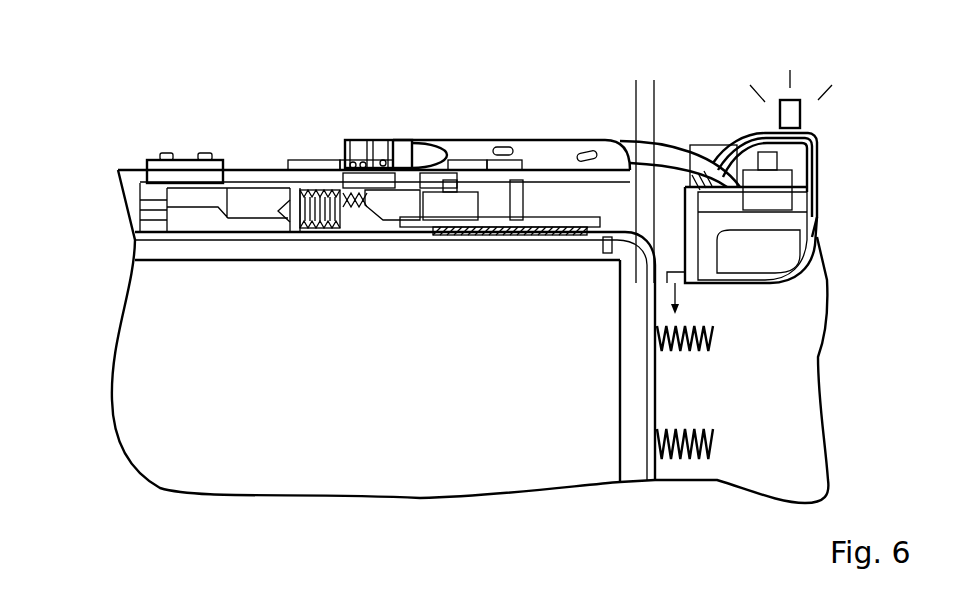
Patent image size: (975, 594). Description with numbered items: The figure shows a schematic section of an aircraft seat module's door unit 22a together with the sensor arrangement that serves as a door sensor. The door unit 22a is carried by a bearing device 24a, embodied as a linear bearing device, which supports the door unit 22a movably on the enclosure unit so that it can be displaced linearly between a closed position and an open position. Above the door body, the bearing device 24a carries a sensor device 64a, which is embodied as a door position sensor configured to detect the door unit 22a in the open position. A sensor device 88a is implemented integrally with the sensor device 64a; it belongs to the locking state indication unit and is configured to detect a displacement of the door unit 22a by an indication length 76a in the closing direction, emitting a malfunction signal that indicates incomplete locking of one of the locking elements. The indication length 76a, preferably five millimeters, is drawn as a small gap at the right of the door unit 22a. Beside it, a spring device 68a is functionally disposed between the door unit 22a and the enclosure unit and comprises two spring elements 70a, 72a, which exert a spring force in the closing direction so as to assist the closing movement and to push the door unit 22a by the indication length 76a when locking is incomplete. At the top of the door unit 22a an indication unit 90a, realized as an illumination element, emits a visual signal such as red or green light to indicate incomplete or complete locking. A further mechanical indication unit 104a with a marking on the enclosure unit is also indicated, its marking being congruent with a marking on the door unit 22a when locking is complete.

The door unit 22a is at (180, 347).
The bearing device 24a is at (107, 219).
The sensor device 64a is at (305, 166).
The sensor device 88a is at (310, 182).
The indication unit 104a is at (606, 220).
The indication length 76a is at (683, 95).
The spring device 68a is at (667, 277).
The indication unit 90a is at (820, 108).
The spring element 70a is at (690, 325).
The spring element 72a is at (690, 433).